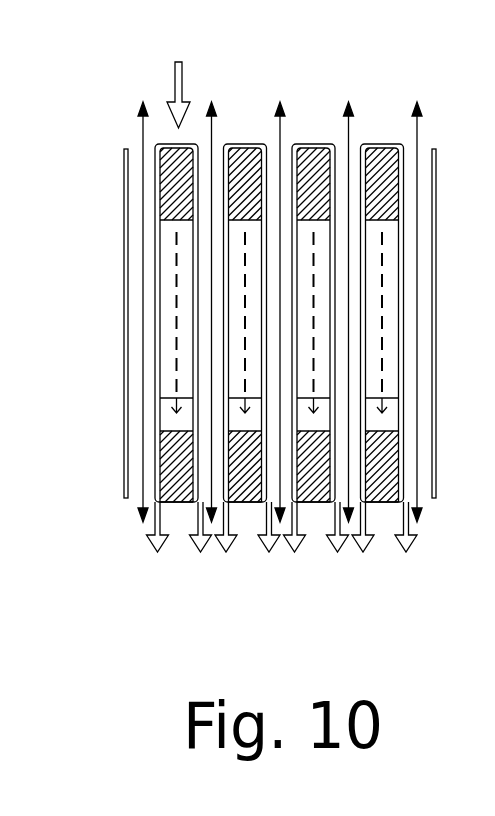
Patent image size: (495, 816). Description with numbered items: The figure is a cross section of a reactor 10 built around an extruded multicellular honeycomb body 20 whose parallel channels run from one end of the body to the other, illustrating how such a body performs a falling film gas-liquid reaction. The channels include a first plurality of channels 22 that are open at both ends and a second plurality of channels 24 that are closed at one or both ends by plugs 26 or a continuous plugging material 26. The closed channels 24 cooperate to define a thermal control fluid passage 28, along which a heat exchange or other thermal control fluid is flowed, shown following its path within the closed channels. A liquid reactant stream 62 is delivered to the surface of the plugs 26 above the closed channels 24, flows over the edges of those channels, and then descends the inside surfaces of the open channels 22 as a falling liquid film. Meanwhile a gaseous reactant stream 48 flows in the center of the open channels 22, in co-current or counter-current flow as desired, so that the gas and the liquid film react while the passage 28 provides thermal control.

The reactor 10 is at (130, 616).
The extruded body 20 is at (124, 240).
The first plurality of channels 22 is at (436, 297).
The second plurality of channels 24 is at (390, 378).
The plugs 26 is at (312, 170).
The thermal control fluid passage 28 is at (176, 334).
The gaseous reactant stream 48 is at (349, 130).
The liquid reactant stream 62 is at (175, 89).